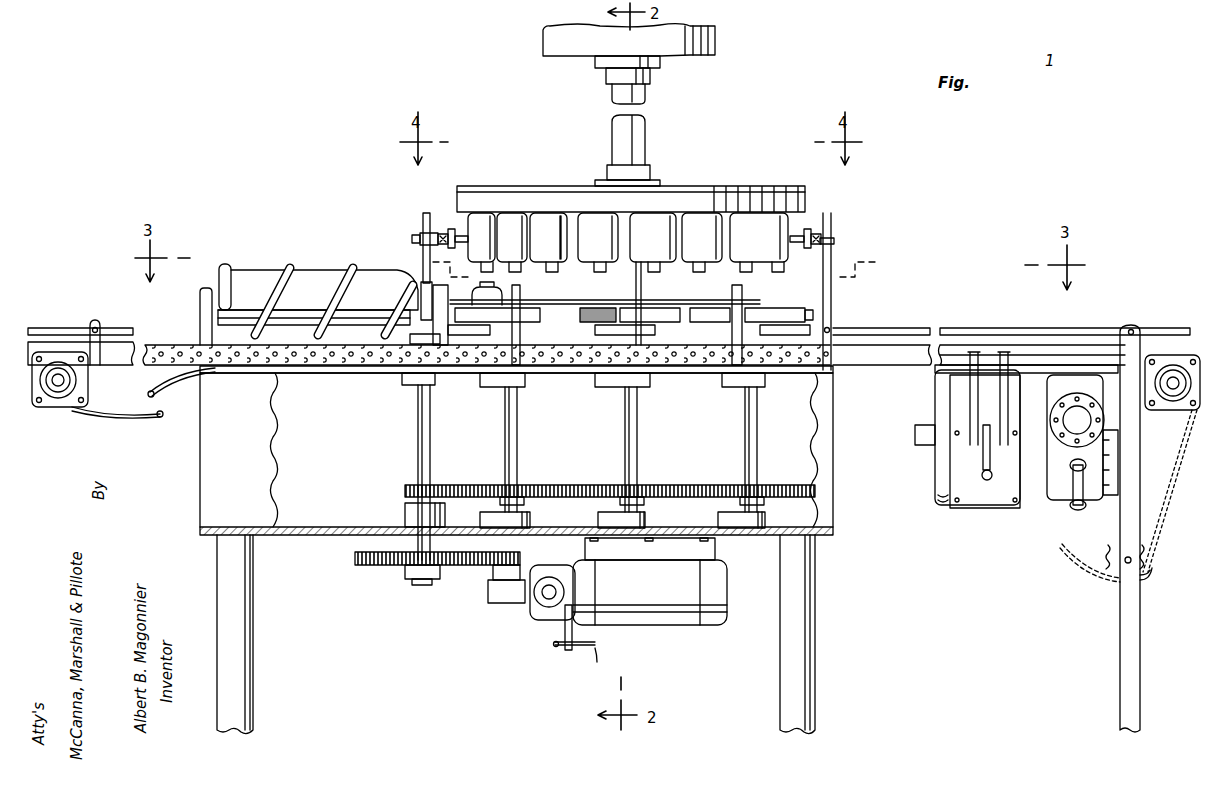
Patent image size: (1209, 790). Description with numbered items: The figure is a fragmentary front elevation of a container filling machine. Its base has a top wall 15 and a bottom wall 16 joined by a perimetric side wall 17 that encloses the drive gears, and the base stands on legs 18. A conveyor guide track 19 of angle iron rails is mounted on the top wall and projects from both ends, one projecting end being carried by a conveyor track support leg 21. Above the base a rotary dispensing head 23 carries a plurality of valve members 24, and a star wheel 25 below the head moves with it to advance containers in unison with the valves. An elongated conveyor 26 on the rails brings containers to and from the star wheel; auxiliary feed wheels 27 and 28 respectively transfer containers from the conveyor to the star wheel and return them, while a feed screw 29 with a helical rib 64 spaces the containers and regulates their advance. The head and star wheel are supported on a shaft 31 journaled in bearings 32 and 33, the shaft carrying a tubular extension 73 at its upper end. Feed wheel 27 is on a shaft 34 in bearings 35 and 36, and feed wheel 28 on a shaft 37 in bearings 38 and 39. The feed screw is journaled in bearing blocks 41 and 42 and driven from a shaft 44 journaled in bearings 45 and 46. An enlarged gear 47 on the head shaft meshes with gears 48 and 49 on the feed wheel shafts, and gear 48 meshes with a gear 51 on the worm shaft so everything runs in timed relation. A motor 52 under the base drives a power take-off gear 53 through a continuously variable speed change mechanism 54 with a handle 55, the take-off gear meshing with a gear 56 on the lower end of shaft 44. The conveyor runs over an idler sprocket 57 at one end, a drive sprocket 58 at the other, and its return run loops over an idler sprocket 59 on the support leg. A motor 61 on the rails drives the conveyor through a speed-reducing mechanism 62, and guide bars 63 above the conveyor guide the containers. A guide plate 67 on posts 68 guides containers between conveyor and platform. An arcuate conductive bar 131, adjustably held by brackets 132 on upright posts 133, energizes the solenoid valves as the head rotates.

The top wall 15 is at (318, 376).
The bottom wall 16 is at (326, 538).
The perimetric side wall 17 is at (270, 488).
The legs 18 is at (252, 662).
The conveyor guide track 19 is at (158, 350).
The conveyor track support leg 21 is at (1118, 625).
The rotary dispensing head 23 is at (699, 176).
The valve members 24 is at (459, 209).
The star wheel 25 is at (597, 302).
The conveyor 26 is at (970, 336).
The auxiliary feed wheel 27 is at (471, 304).
The auxiliary feed wheel 28 is at (815, 307).
The feed screw 29 is at (321, 265).
The shaft 31 is at (637, 440).
The bearing 32 is at (650, 386).
The bearing 33 is at (646, 519).
The shaft 34 is at (518, 440).
The bearing 35 is at (525, 386).
The bearing 36 is at (531, 519).
The shaft 37 is at (757, 440).
The bearing 38 is at (765, 386).
The bearing 39 is at (766, 519).
The bearing block 41 is at (207, 287).
The bearing block 42 is at (436, 342).
The shaft 44 is at (418, 446).
The bearing 45 is at (436, 385).
The bearing 46 is at (405, 516).
The enlarged gear 47 is at (650, 485).
The gear 48 is at (530, 485).
The gear 49 is at (780, 485).
The gear 51 is at (405, 490).
The motor 52 is at (678, 618).
The power take-off gear 53 is at (518, 558).
The continuously variable speed change mechanism 54 is at (542, 620).
The handle 55 is at (569, 652).
The gear 56 is at (450, 575).
The idler sprocket 57 is at (62, 408).
The drive sprocket 58 is at (1170, 410).
The idler sprocket 59 is at (1103, 570).
The motor 61 is at (942, 503).
The speed-reducing mechanism 62 is at (1063, 500).
The guide bars 63 is at (1025, 340).
The helical rib 64 is at (291, 266).
The guide plate 67 is at (684, 308).
The posts 68 is at (742, 300).
The tubular extension 73 is at (641, 298).
The arcuate bar 131 is at (420, 236).
The brackets 132 is at (413, 240).
The upright posts 133 is at (422, 214).